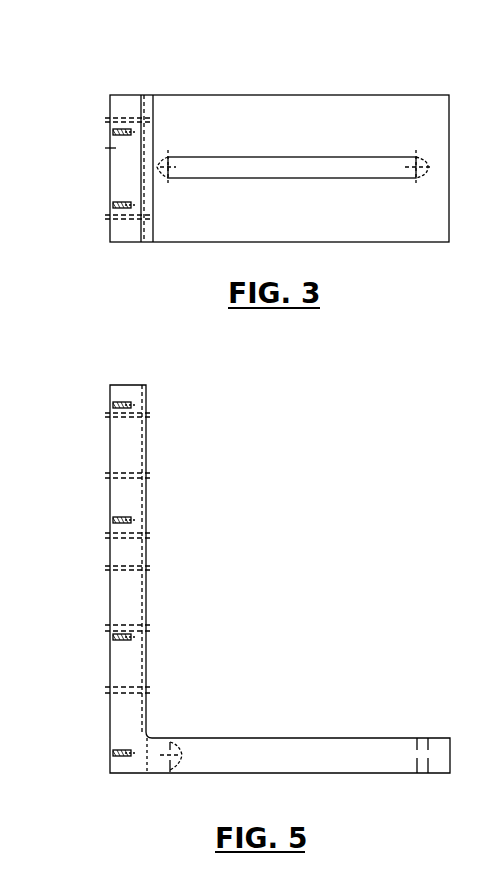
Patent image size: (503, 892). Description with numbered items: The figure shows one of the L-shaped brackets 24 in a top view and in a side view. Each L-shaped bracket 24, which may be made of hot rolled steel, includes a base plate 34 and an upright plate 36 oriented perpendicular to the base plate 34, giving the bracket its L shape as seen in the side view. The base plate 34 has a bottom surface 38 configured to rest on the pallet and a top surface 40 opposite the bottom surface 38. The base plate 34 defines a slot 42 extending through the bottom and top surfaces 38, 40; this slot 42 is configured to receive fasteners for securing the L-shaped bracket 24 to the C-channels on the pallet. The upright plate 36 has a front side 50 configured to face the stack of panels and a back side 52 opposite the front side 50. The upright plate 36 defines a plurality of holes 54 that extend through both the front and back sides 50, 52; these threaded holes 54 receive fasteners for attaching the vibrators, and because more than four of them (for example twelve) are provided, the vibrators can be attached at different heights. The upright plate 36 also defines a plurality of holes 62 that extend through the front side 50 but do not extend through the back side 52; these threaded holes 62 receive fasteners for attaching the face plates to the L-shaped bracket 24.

In FIG. 3, the L-shaped bracket 24 is at (272, 70).
In FIG. 5, the L-shaped bracket 24 is at (246, 483).
In FIG. 3, the base plate 34 is at (430, 128).
In FIG. 5, the base plate 34 is at (452, 752).
In FIG. 3, the upright plate 36 is at (130, 180).
In FIG. 5, the upright plate 36 is at (130, 593).
In FIG. 5, the bottom surface 38 is at (307, 776).
In FIG. 3, the top surface 40 is at (293, 218).
In FIG. 5, the top surface 40 is at (306, 735).
In FIG. 3, the slot 42 is at (332, 157).
In FIG. 5, the slot 42 is at (176, 752).
In FIG. 5, the front side 50 is at (110, 592).
In FIG. 5, the back side 52 is at (150, 658).
In FIG. 3, the holes 54 is at (130, 116).
In FIG. 5, the holes 54 is at (130, 473).
In FIG. 3, the holes 62 is at (108, 146).
In FIG. 5, the holes 62 is at (120, 402).